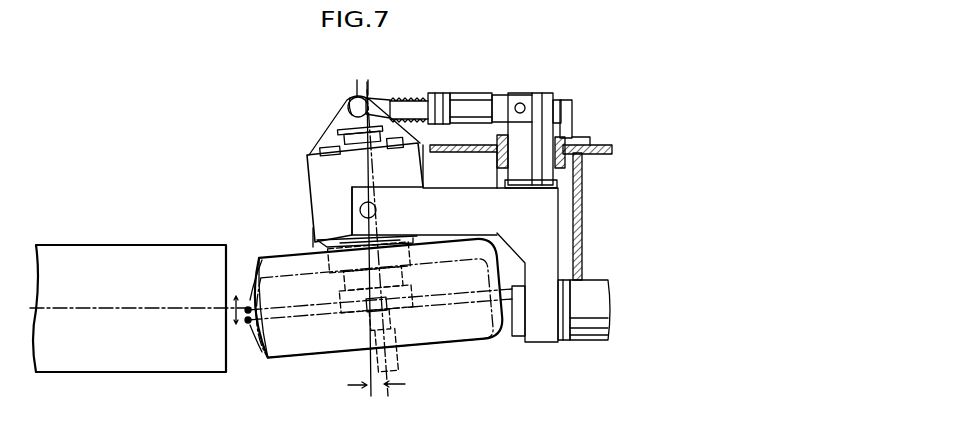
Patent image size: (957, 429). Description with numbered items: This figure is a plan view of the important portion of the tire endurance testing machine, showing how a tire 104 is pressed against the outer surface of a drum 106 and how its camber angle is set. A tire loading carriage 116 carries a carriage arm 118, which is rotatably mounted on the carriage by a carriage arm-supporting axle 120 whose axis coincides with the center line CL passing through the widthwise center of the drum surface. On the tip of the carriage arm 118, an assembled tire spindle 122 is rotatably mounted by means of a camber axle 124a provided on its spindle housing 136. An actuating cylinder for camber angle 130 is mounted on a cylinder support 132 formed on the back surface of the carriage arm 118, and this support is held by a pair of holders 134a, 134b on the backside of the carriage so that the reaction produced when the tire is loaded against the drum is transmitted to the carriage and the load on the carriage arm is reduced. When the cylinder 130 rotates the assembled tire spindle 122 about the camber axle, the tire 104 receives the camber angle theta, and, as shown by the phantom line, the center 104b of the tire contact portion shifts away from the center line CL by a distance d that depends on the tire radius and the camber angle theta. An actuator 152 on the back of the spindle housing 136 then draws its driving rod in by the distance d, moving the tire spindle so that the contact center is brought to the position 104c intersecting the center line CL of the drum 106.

The tire 104 is at (460, 352).
The center of the contact portion of the tire 104b is at (285, 366).
The position intersecting the center line of the drum 104c is at (250, 276).
The drum 106 is at (172, 244).
The tire loading carriage 116 is at (607, 145).
The carriage arm 118 is at (547, 240).
The carriage arm-supporting axle 120 is at (562, 338).
The assembled tire spindle 122 is at (302, 188).
The camber axle 124a is at (360, 210).
The actuating cylinder for camber angle 130 is at (474, 93).
The cylinder support 132 is at (533, 95).
The holder 134a is at (495, 140).
The holder 134b is at (565, 163).
The spindle housing 136 is at (313, 173).
The actuator 152 is at (350, 128).
The center line CL is at (134, 307).
The distance d is at (236, 330).
The camber angle theta is at (386, 384).